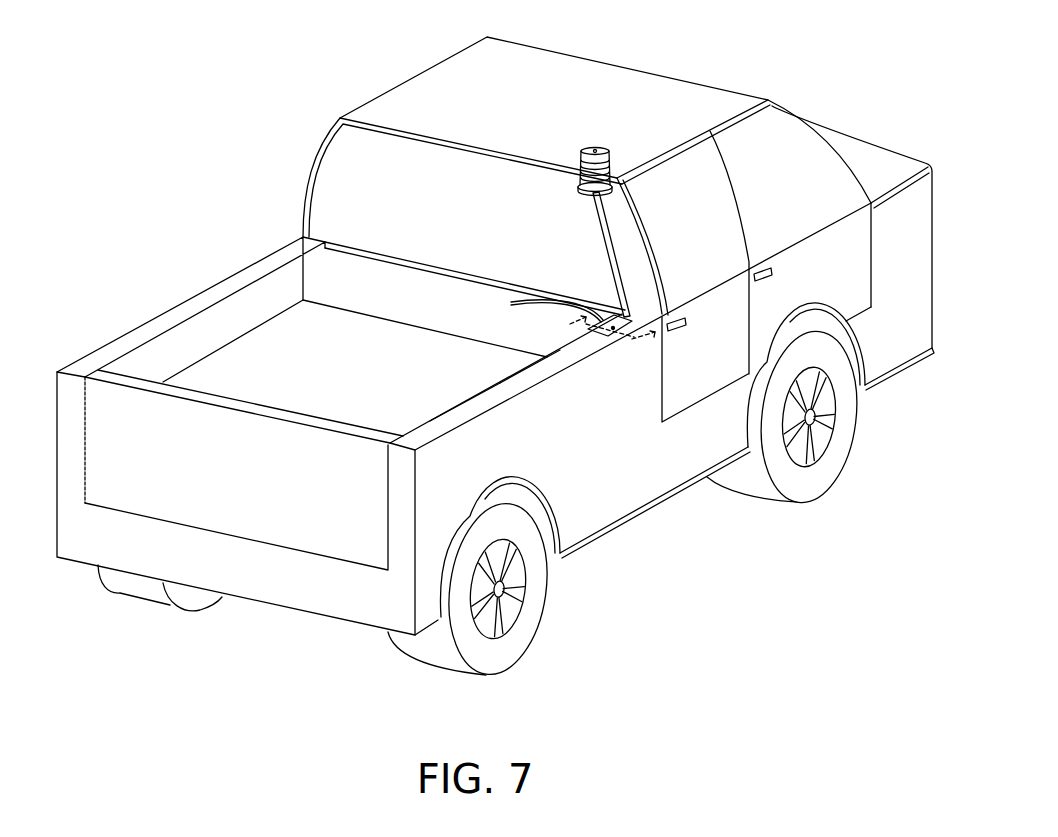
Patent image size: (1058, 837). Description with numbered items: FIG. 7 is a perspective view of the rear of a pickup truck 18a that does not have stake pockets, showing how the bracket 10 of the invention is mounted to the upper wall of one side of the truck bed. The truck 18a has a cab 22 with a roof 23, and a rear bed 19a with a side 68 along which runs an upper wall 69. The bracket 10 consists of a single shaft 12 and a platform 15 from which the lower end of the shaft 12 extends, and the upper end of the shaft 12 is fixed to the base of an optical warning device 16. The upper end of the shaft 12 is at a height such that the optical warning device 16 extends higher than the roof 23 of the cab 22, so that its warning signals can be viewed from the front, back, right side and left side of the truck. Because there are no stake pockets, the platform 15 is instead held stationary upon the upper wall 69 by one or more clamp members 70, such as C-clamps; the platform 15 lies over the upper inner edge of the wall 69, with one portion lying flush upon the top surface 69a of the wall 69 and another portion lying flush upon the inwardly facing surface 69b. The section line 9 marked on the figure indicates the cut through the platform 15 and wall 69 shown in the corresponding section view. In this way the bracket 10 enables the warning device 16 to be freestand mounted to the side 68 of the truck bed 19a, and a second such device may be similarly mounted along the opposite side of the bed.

The section line 9- 9 is at (609, 338).
The bracket 10 is at (570, 247).
The shaft 12 is at (608, 242).
The platform 15 is at (620, 340).
The optical warning device 16 is at (596, 149).
The truck 18a is at (872, 150).
The bed 19a is at (323, 373).
The cab 22 is at (803, 125).
The roof 23 is at (688, 88).
The side 68 is at (430, 433).
The upper wall 69 is at (465, 410).
The top surface 69a is at (538, 363).
The inwardly facing surface 69b is at (497, 383).
The clamp member 70 is at (511, 302).